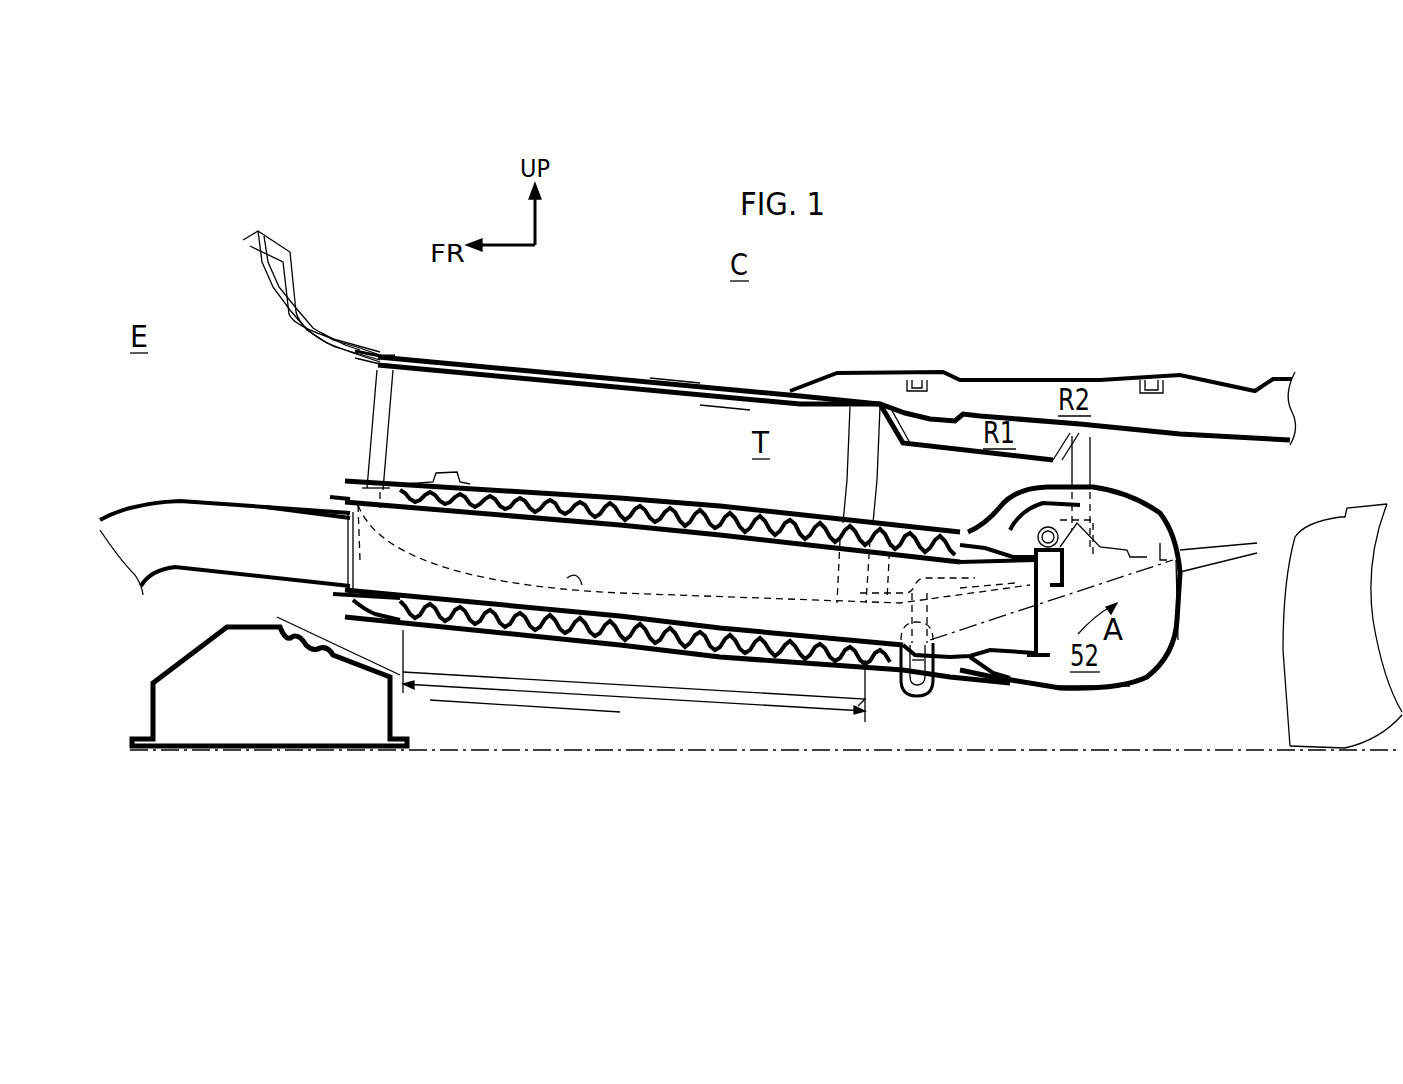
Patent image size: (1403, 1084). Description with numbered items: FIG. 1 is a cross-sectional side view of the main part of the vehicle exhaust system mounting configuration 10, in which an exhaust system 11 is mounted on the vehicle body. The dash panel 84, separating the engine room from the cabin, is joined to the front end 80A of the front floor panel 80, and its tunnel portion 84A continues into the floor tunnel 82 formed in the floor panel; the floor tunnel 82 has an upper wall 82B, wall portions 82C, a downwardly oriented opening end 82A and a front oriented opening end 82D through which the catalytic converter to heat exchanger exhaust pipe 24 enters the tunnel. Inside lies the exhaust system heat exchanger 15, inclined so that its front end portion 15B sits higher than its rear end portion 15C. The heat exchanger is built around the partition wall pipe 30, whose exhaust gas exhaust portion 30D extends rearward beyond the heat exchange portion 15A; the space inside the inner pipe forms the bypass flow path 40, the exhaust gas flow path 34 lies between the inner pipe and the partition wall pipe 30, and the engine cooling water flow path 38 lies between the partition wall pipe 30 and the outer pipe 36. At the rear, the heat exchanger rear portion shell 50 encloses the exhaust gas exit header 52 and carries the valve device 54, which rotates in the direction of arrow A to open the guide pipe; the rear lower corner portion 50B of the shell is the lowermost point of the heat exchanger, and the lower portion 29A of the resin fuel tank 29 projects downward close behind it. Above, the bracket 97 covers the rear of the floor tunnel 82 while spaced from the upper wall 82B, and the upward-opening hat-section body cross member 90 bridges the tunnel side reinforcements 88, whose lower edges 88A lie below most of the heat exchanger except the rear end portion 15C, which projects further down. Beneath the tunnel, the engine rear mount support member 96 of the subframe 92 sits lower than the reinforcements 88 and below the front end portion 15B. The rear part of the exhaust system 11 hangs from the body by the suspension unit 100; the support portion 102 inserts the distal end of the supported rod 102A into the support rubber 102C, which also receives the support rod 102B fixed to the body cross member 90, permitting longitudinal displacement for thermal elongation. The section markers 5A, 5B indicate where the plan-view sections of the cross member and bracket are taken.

The vehicle exhaust system mounting configuration 10 is at (977, 303).
The exhaust system 11 is at (677, 690).
The exhaust system heat exchanger 15 is at (705, 660).
The heat exchange portion 15A is at (806, 712).
The front end portion 15B is at (345, 607).
The rear end portion 15C is at (1178, 668).
The catalytic converter to heat exchanger exhaust pipe 24 is at (200, 514).
The fuel tank 29 is at (1331, 513).
The lower portion 29A is at (1358, 750).
The partition wall pipe 30 is at (645, 493).
The exhaust gas exhaust portion 30D is at (903, 535).
The exhaust gas flow path 34 is at (530, 505).
The outer pipe 36 is at (592, 507).
The engine cooling water flow path 38 is at (632, 507).
The bypass flow path 40 is at (608, 571).
The heat exchanger rear portion shell 50 is at (1111, 638).
The rear lower corner portion 50B is at (1145, 690).
The exhaust gas exit header 52 is at (1044, 602).
The valve device 54 is at (1115, 528).
The front floor panel 80 is at (834, 375).
The floor tunnel 82 is at (559, 369).
The opening end 82A is at (578, 588).
The upper wall 82B is at (672, 380).
The wall portion 82C is at (723, 415).
The front oriented opening end 82D is at (390, 436).
The dash panel 84 is at (304, 276).
The tunnel portion 84A is at (325, 337).
The front end 80A is at (377, 367).
The tunnel side reinforcement 88 is at (502, 668).
The lower edge 88A is at (640, 690).
The body cross member 90 is at (913, 460).
The subframe 92 is at (269, 721).
The engine rear mount support member 96 is at (305, 750).
The bracket 97 is at (1072, 374).
The suspension unit 100 is at (972, 659).
The support portion 102 is at (940, 689).
The supported rod 102A is at (908, 690).
The support rod 102B is at (932, 615).
The support rubber 102C is at (927, 680).
The section line 5A is at (1023, 378).
The section line 5B is at (905, 366).